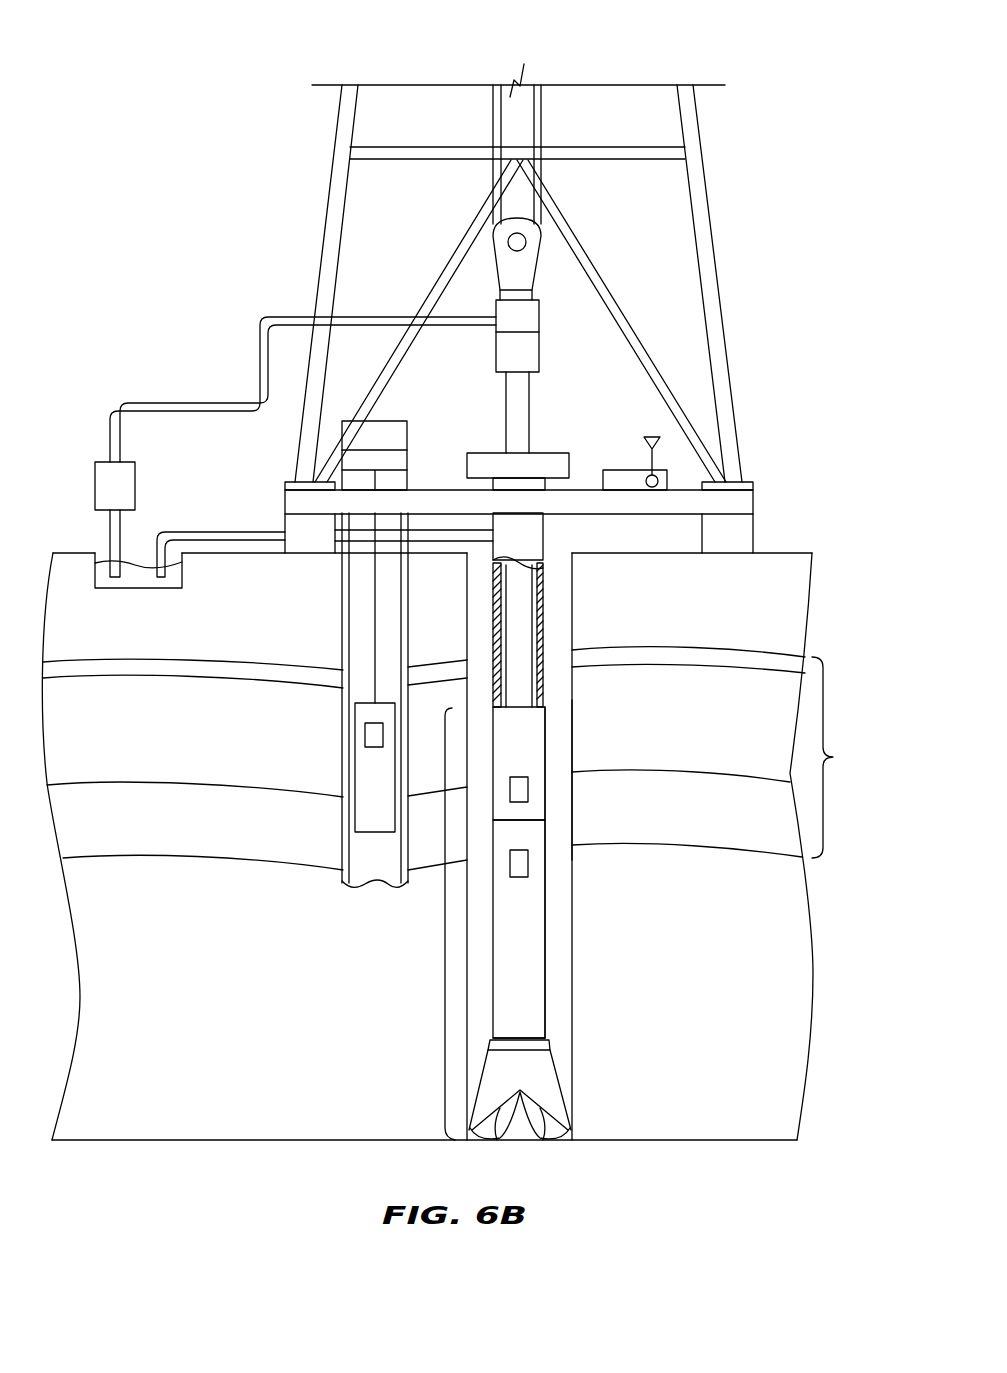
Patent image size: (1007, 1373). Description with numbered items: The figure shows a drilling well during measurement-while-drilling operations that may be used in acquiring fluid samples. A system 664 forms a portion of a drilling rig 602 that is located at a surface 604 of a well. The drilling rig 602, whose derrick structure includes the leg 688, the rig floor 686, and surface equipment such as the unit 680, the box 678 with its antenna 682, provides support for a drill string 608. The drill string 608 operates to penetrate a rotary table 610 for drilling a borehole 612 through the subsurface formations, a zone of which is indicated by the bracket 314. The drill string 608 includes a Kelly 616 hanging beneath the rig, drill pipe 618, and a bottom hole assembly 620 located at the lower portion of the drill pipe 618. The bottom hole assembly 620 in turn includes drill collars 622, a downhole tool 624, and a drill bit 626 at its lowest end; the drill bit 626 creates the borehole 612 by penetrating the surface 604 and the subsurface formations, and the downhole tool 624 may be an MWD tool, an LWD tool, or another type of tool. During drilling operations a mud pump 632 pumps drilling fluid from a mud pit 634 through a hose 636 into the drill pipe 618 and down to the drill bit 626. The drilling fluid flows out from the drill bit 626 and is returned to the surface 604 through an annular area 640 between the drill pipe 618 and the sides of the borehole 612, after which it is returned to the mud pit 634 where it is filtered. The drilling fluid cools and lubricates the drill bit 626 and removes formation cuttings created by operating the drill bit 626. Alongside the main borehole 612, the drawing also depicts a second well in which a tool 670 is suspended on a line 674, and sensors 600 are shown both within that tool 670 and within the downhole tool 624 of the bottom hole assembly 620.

The system 664 is at (192, 57).
The drilling rig 602 is at (558, 316).
The derrick leg 688 is at (721, 282).
The hose 636 is at (293, 316).
The mud pump 680 is at (408, 432).
The Kelly 616 is at (506, 413).
The rotary table 610 is at (552, 453).
The antenna 682 is at (648, 476).
The surface controller 678 is at (628, 468).
The rig floor 686 is at (755, 497).
The surface 604 is at (790, 551).
The formation zone 314 is at (840, 758).
The mud pump 632 is at (93, 486).
The mud pit 634 is at (140, 588).
The wireline cable 674 is at (373, 612).
The borehole 612 is at (342, 636).
The drill string 608 is at (493, 631).
The drill collars 622 is at (547, 683).
The drill pipe 618 is at (533, 723).
The annular area 640 is at (560, 764).
The downhole tool 624 is at (535, 837).
The sensor 600 is at (366, 738).
The wireline tool 670 is at (352, 807).
The bottom hole assembly 620 is at (445, 921).
The drill bit 626 is at (548, 1073).